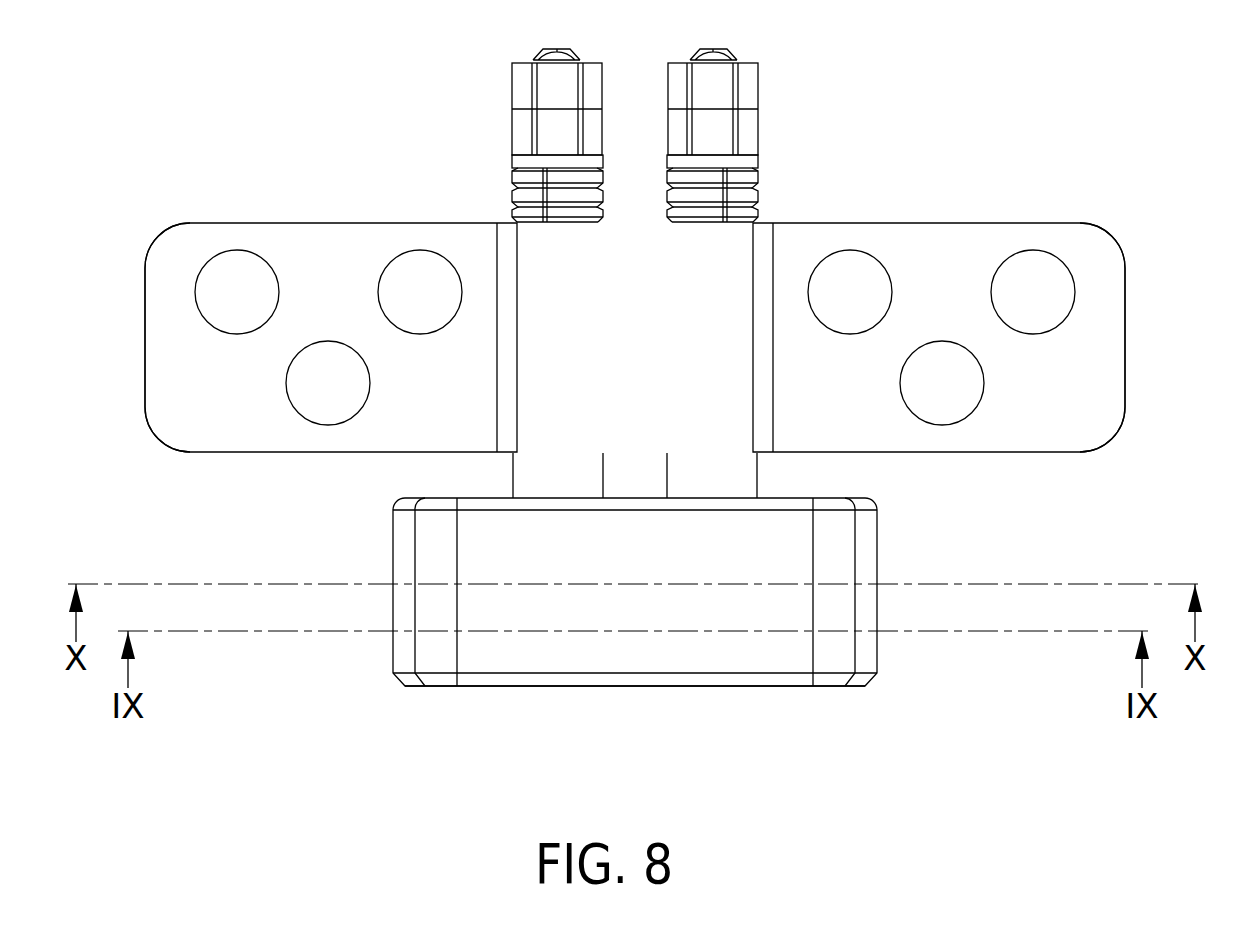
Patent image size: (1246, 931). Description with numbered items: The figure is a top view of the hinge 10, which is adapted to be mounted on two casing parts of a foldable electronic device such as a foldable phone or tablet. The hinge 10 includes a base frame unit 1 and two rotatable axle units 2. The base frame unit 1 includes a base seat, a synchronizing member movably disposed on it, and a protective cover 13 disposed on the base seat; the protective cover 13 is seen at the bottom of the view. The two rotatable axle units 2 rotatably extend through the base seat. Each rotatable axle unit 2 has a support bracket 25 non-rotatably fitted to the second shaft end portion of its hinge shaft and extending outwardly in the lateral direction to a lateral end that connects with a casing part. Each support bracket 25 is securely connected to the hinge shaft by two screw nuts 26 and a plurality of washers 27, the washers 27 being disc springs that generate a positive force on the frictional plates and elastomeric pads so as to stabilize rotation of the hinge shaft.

The base frame unit 1 is at (770, 686).
The rotatable axle unit 2 is at (285, 224).
The hinge 10 is at (492, 727).
The protective cover 13 is at (693, 686).
The support bracket 25 is at (167, 362).
The screw nut 26 is at (532, 137).
The washer 27 is at (513, 202).